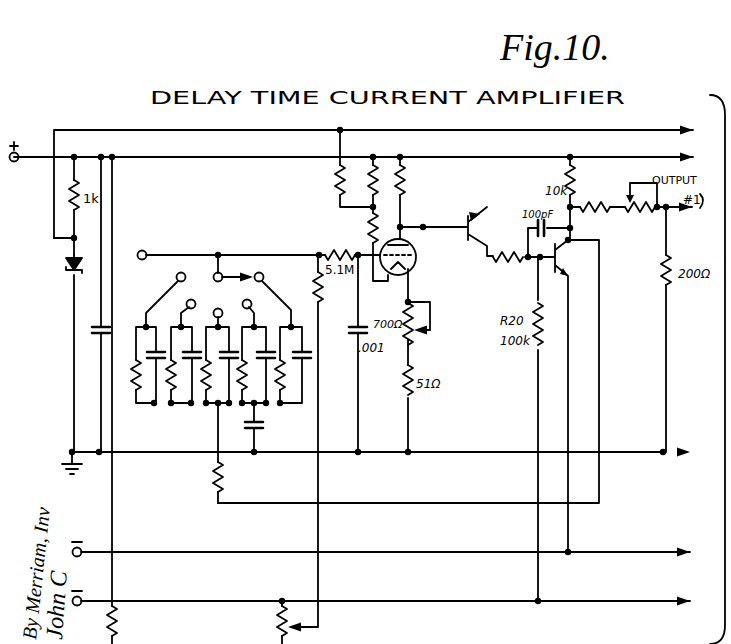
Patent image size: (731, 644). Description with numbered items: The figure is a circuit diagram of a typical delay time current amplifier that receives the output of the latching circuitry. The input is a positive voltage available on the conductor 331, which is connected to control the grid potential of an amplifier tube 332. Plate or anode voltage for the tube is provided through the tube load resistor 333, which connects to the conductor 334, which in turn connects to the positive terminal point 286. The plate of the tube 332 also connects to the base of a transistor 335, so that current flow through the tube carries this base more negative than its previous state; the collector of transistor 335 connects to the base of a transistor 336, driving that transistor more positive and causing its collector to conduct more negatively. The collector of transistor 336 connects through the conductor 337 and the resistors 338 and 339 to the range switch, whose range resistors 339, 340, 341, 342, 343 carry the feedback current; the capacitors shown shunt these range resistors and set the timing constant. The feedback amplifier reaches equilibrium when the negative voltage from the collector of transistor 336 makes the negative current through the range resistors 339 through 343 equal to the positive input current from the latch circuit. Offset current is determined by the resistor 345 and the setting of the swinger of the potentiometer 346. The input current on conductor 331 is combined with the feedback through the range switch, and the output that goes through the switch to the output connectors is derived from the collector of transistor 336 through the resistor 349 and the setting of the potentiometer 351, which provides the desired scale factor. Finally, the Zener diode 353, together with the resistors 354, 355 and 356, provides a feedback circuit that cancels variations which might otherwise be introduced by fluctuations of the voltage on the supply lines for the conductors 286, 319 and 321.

The positive terminal point 286 is at (14, 162).
The supply line conductor 319 is at (80, 606).
The supply line conductor 321 is at (80, 557).
The input conductor 331 is at (198, 254).
The amplifier tube 332 is at (416, 268).
The tube load resistor 333 is at (405, 180).
The conductor 334 is at (236, 160).
The transistor 335 is at (480, 214).
The transistor 336 is at (566, 259).
The conductor 337 is at (404, 503).
The resistor 338 is at (212, 482).
The range resistor 339 is at (148, 380).
The range resistor 340 is at (173, 380).
The range resistor 341 is at (209, 380).
The range resistor 342 is at (262, 422).
The range resistor 343 is at (282, 380).
The resistor 345 is at (314, 298).
The potentiometer 346 is at (276, 622).
The resistor 349 is at (600, 212).
The potentiometer 351 is at (644, 190).
The Zener diode 353 is at (66, 264).
The resistor 354 is at (338, 176).
The resistor 355 is at (375, 176).
The resistor 356 is at (370, 234).